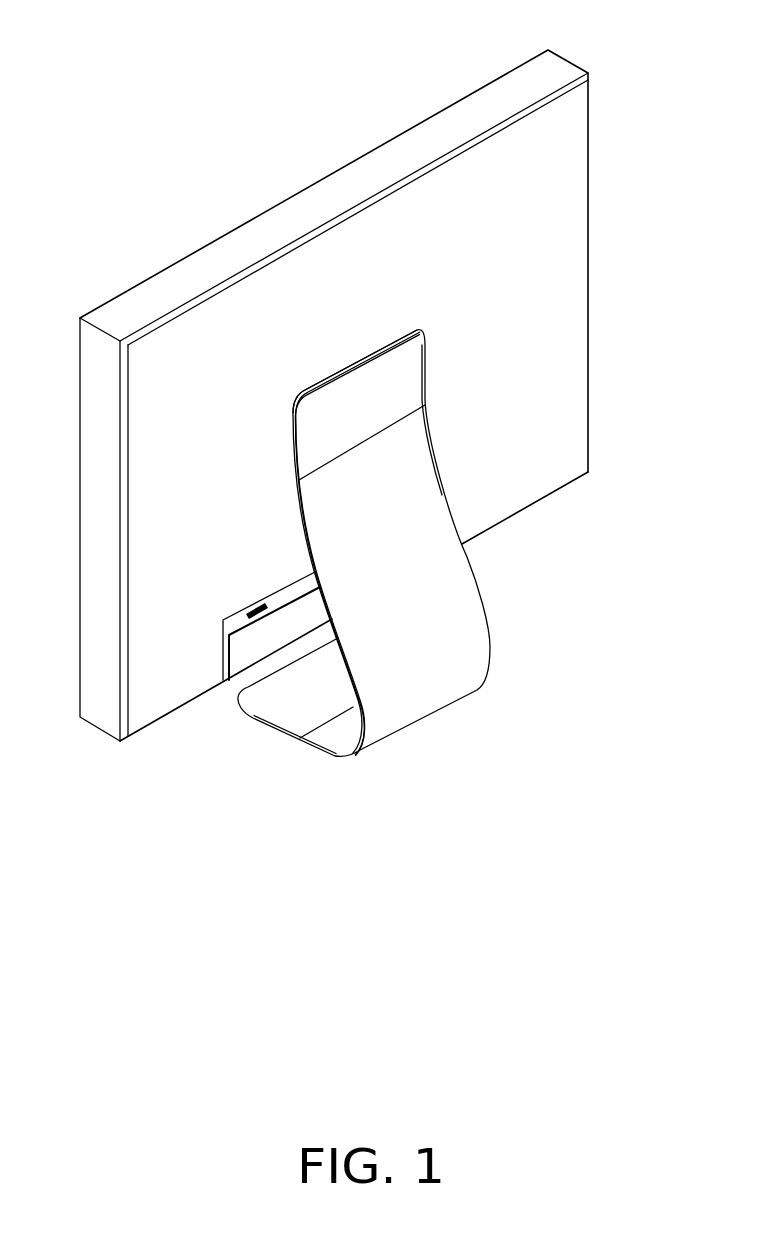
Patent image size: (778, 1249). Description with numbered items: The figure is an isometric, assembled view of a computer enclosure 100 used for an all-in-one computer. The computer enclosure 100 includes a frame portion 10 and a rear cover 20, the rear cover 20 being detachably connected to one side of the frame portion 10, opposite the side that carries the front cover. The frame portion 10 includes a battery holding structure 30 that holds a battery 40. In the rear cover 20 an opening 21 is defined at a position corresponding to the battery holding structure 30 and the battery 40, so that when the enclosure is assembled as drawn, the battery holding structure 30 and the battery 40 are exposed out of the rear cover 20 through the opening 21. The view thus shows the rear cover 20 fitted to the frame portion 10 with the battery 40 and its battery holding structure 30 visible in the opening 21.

The computer enclosure 100 is at (229, 186).
The frame portion 10 is at (543, 77).
The rear cover 20 is at (555, 200).
The opening 21 is at (435, 620).
The battery holding structure 30 is at (232, 626).
The battery 40 is at (253, 648).